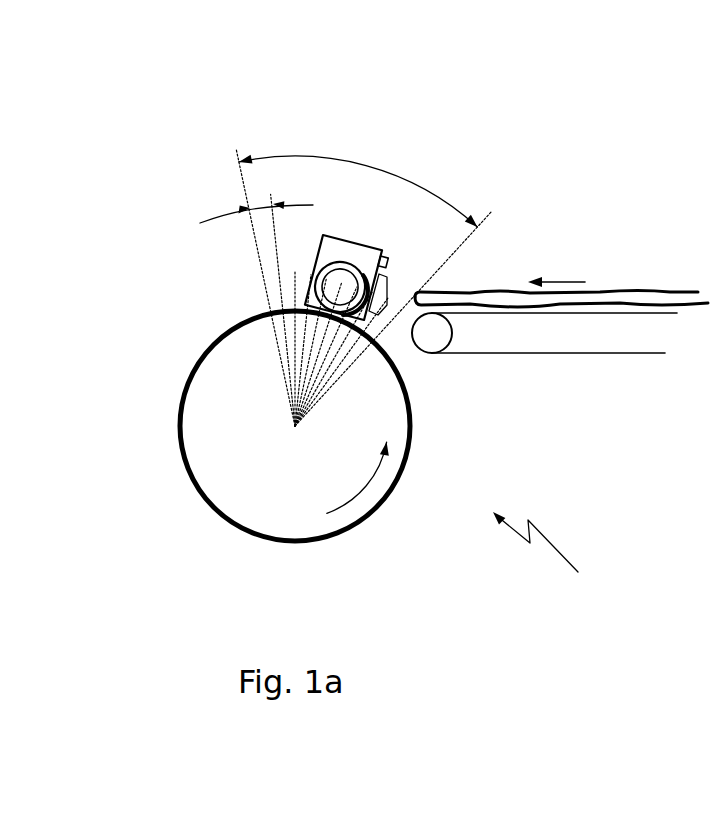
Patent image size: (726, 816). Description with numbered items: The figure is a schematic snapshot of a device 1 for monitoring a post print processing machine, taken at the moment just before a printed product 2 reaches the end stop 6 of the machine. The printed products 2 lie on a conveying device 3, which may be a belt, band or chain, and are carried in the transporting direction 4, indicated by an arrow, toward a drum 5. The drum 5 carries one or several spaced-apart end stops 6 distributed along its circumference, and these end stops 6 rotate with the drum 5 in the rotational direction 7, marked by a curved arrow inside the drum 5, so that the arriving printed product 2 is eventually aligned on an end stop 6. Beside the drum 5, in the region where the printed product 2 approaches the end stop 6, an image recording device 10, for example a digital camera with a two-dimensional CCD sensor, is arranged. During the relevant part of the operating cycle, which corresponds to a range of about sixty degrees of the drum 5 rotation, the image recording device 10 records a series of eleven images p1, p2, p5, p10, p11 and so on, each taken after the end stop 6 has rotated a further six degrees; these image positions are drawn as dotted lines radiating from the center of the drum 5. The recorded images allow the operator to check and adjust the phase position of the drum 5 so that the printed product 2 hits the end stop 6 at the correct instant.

The device for monitoring a post print processing machine 1 is at (539, 542).
The printed products 2 is at (630, 292).
The conveying device 3 is at (619, 314).
The transporting direction 4 is at (556, 271).
The drum 5 is at (241, 477).
The end stop 6 is at (365, 300).
The rotational direction 7 is at (358, 477).
The image recording device 10 is at (367, 258).
The image p1 is at (457, 253).
The image p2 is at (353, 355).
The image p5 is at (330, 343).
The image p10 is at (280, 298).
The image p11 is at (262, 256).